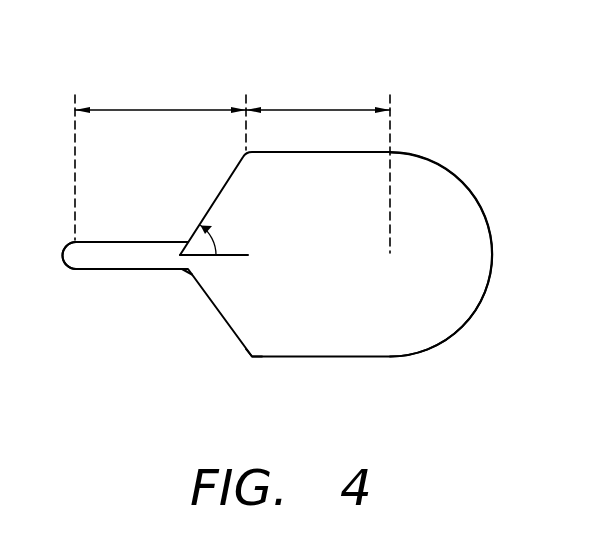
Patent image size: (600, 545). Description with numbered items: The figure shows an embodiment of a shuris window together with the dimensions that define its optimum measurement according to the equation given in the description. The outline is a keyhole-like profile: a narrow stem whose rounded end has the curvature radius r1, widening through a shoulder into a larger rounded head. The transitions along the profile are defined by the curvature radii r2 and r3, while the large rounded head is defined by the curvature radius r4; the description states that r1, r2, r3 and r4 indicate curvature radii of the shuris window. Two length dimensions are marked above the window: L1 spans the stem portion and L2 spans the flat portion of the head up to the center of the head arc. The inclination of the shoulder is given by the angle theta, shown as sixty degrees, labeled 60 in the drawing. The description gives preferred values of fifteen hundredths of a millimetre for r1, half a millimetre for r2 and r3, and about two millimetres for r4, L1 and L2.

The curvature radius r1 is at (63, 263).
The curvature radius r2 is at (186, 271).
The curvature radius r3 is at (254, 354).
The curvature radius r4 is at (462, 183).
The length dimension L1 is at (160, 99).
The length dimension L2 is at (318, 99).
The angle theta 60 is at (233, 238).